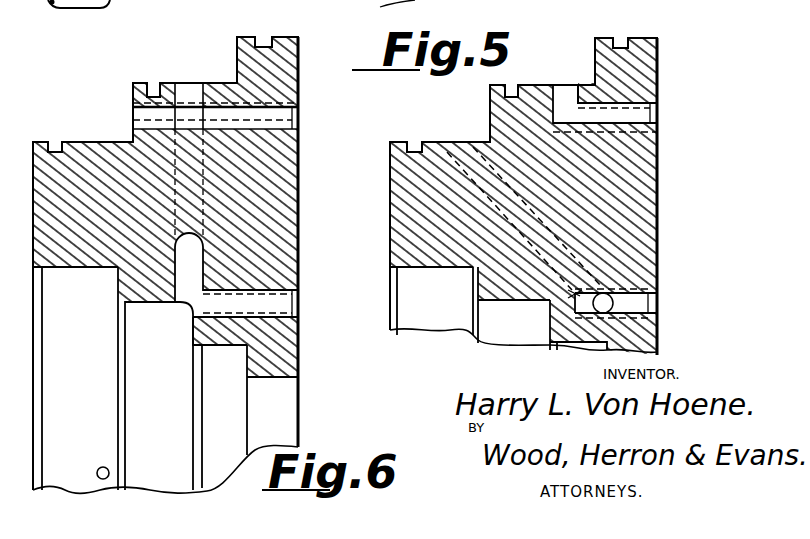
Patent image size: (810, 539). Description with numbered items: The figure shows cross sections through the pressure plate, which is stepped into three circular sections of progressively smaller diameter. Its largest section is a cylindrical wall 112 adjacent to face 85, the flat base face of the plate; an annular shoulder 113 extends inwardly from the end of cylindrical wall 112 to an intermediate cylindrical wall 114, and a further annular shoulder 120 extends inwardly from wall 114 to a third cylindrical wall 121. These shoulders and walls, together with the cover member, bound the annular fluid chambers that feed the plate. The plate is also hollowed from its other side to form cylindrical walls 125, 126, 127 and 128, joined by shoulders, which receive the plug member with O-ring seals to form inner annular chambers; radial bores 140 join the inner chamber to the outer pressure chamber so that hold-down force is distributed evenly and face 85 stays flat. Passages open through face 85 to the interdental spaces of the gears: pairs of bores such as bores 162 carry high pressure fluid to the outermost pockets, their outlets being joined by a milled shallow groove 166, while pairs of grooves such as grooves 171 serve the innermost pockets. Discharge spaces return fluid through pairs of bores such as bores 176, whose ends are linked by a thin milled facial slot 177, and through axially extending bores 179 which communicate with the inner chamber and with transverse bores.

In FIG. 6, the face 85 is at (298, 351).
In FIG. 5, the face 85 is at (658, 265).
In FIG. 6, the cylindrical wall 112 is at (277, 36).
In FIG. 5, the cylindrical wall 112 is at (648, 37).
In FIG. 6, the annular shoulder 113 is at (238, 54).
In FIG. 5, the annular shoulder 113 is at (595, 50).
In FIG. 6, the intermediate cylindrical wall 114 is at (167, 83).
In FIG. 5, the intermediate cylindrical wall 114 is at (538, 84).
In FIG. 6, the annular shoulder 120 is at (133, 97).
In FIG. 6, the third cylindrical wall 121 is at (72, 142).
In FIG. 6, the cylindrical wall 125 is at (75, 270).
In FIG. 5, the cylindrical wall 125 is at (440, 268).
In FIG. 6, the cylindrical wall 126 is at (155, 303).
In FIG. 5, the cylindrical wall 126 is at (530, 301).
In FIG. 6, the cylindrical wall 127 is at (225, 346).
In FIG. 6, the cylindrical wall 128 is at (275, 378).
In FIG. 6, the radial bores 140 is at (100, 468).
In FIG. 6, the bores 162 is at (277, 113).
In FIG. 6, the groove 166 is at (298, 122).
In FIG. 5, the grooves 171 is at (575, 258).
In FIG. 5, the bores 176 is at (637, 113).
In FIG. 5, the facial slot 177 is at (658, 115).
In FIG. 6, the axially extending bores 179 is at (277, 303).
In FIG. 5, the axially extending bores 179 is at (616, 303).